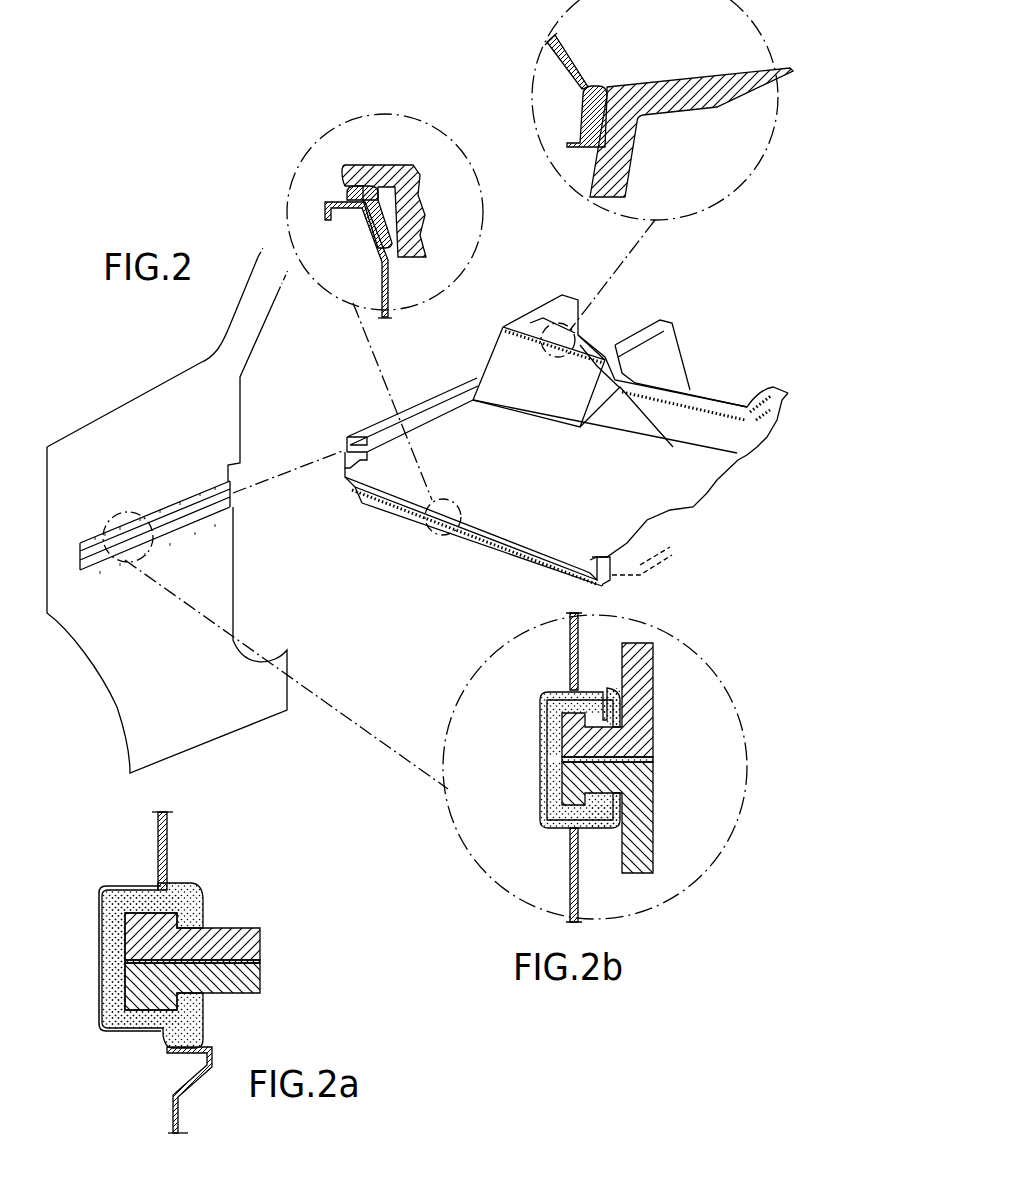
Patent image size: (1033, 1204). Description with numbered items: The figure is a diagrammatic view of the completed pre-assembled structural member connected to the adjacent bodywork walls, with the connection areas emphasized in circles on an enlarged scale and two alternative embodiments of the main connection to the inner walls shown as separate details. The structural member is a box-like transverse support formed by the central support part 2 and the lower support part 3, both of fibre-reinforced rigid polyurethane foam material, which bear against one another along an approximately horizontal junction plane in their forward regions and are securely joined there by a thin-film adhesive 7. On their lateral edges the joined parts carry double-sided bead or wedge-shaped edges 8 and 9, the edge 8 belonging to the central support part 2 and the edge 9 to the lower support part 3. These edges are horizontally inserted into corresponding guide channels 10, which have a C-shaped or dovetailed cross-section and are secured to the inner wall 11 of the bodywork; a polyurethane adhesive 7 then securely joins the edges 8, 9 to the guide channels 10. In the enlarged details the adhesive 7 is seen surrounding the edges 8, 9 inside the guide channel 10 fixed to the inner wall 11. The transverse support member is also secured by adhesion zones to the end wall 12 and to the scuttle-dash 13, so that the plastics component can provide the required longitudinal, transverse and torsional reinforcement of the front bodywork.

In FIG. 2, the central support part 2 is at (730, 90).
In FIG. 2, the lower support part 3 is at (393, 182).
In FIG. 2, the adhesive 7 is at (347, 192).
In FIG. 2b, the adhesive 7 is at (555, 705).
In FIG. 2a, the adhesive 7 is at (173, 888).
In FIG. 2, the bead or wedge-shaped edge 8 is at (345, 440).
In FIG. 2b, the bead or wedge-shaped edge 8 is at (565, 737).
In FIG. 2a, the bead or wedge-shaped edge 8 is at (192, 928).
In FIG. 2, the bead or wedge-shaped edge 9 is at (345, 460).
In FIG. 2b, the bead or wedge-shaped edge 9 is at (568, 783).
In FIG. 2a, the bead or wedge-shaped edge 9 is at (243, 980).
In FIG. 2, the guide channel 10 is at (167, 533).
In FIG. 2b, the guide channel 10 is at (545, 822).
In FIG. 2a, the guide channel 10 is at (103, 1018).
In FIG. 2, the inner wall 11 is at (149, 467).
In FIG. 2b, the inner wall 11 is at (573, 890).
In FIG. 2a, the inner wall 11 is at (160, 853).
In FIG. 2, the end wall 12 is at (378, 243).
In FIG. 2, the scuttle-dash 13 is at (566, 44).